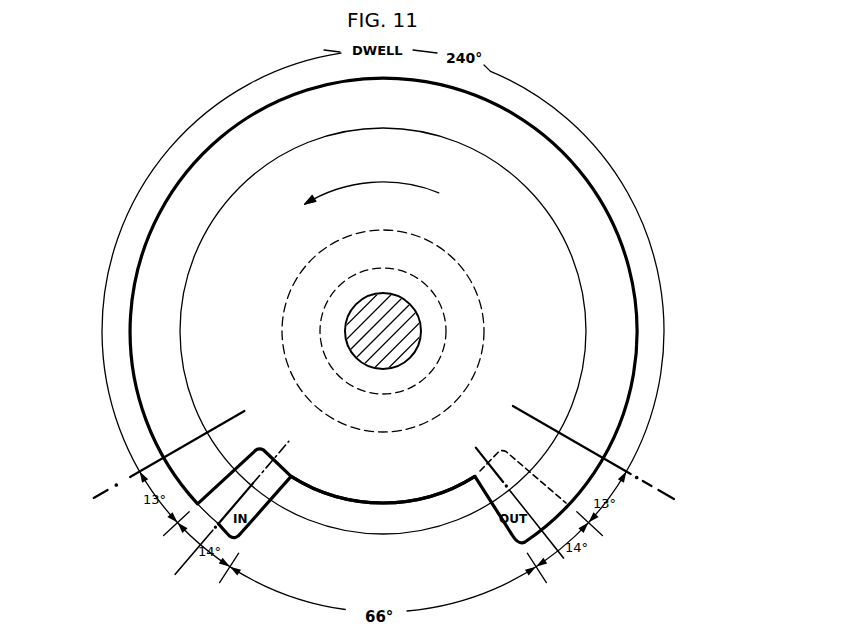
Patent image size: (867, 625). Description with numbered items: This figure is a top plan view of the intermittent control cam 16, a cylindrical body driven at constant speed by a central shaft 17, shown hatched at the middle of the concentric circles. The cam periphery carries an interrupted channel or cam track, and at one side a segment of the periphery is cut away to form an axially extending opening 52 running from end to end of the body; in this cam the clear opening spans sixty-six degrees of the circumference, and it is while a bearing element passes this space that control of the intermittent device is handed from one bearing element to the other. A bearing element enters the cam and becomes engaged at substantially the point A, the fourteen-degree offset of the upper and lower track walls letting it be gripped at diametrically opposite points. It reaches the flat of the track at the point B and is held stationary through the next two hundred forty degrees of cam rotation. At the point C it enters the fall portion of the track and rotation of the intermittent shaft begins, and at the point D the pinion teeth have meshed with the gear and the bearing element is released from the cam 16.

The intermittent control cam 16 is at (620, 313).
The shaft 17 is at (409, 319).
The axially extending opening 52 is at (391, 500).
The point A is at (222, 517).
The point B is at (138, 472).
The point C is at (618, 470).
The point D is at (532, 519).